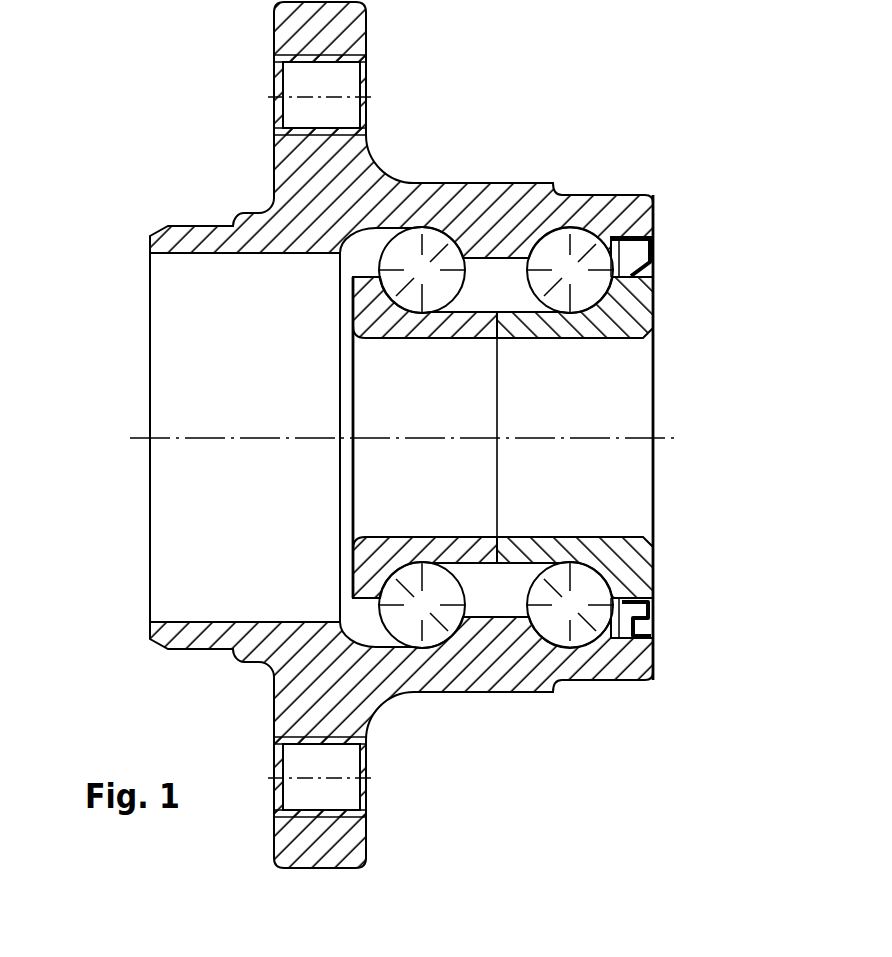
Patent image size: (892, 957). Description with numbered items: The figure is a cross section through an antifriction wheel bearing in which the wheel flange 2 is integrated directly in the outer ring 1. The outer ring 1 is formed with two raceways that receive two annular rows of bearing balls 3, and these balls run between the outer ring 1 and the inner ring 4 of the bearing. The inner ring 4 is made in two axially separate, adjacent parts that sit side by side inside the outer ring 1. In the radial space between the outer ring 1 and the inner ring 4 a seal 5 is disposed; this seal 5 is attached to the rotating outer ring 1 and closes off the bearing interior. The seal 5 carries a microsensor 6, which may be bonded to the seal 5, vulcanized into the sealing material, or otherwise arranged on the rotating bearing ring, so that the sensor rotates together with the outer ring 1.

The outer ring 1 is at (605, 668).
The wheel flange 2 is at (332, 836).
The bearing balls 3 is at (430, 243).
The inner ring 4 is at (632, 319).
The seal 5 is at (650, 632).
The microsensor 6 is at (650, 250).